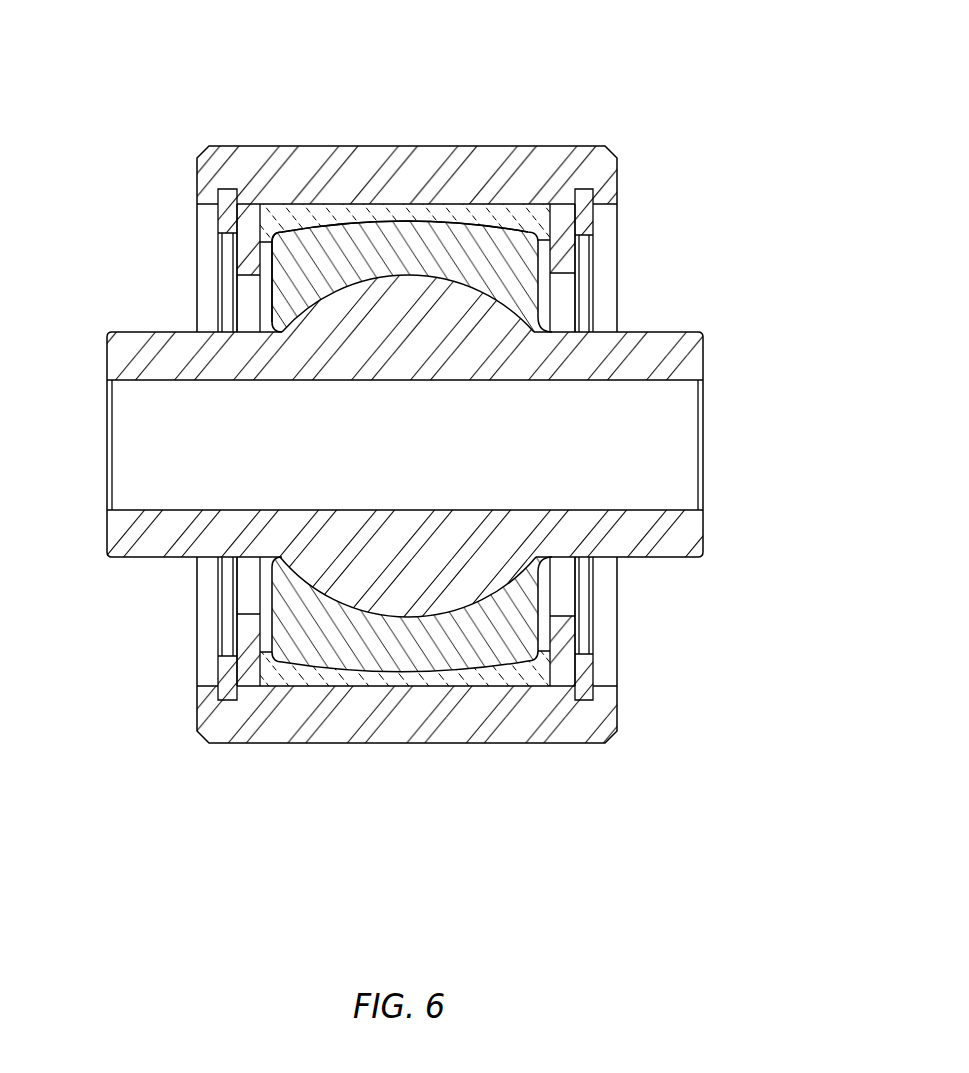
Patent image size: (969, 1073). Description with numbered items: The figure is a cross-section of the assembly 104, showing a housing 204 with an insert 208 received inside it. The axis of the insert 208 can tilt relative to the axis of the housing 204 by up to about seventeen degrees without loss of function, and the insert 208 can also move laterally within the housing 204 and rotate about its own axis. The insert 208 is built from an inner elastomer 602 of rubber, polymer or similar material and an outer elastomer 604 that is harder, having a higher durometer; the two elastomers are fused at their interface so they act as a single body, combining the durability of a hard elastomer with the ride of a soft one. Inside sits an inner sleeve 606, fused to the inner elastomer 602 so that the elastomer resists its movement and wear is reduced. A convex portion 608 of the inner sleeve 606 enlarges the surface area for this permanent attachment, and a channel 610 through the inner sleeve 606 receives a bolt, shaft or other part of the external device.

The spherical bearing assembly 104 is at (127, 112).
The housing 204 is at (440, 170).
The insert 208 is at (299, 215).
The inner elastomer 602 is at (486, 213).
The outer elastomer 604 is at (480, 258).
The inner sleeve 606 is at (475, 538).
The convex portion 608 is at (453, 312).
The channel 610 is at (665, 443).